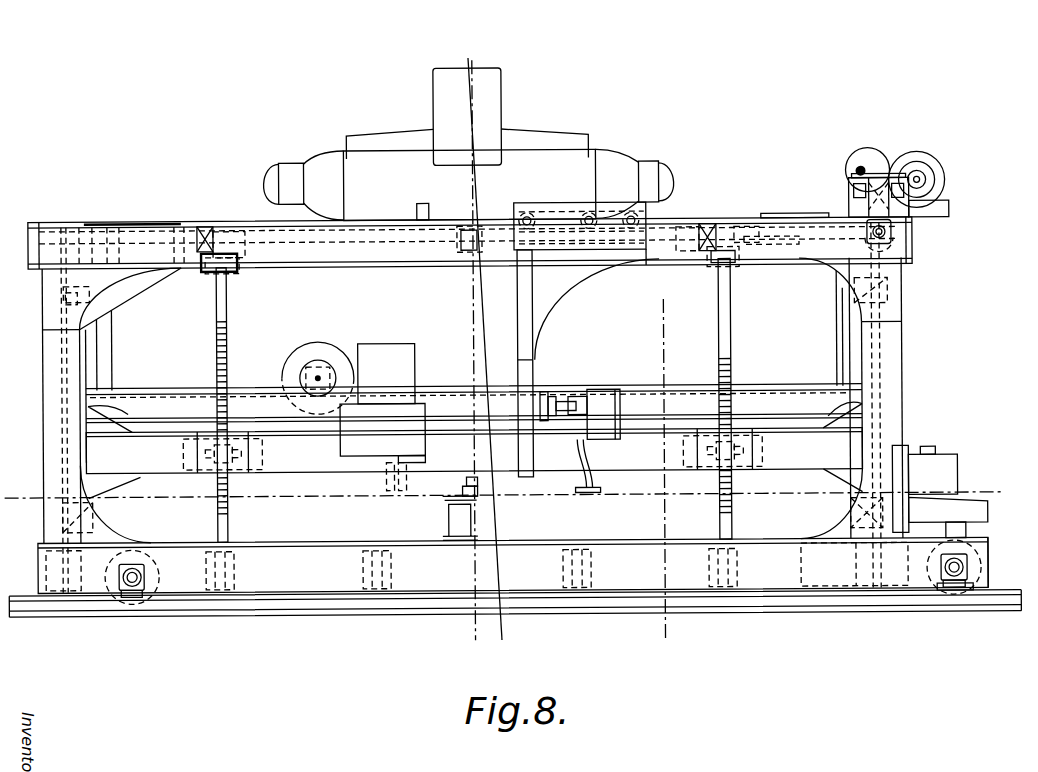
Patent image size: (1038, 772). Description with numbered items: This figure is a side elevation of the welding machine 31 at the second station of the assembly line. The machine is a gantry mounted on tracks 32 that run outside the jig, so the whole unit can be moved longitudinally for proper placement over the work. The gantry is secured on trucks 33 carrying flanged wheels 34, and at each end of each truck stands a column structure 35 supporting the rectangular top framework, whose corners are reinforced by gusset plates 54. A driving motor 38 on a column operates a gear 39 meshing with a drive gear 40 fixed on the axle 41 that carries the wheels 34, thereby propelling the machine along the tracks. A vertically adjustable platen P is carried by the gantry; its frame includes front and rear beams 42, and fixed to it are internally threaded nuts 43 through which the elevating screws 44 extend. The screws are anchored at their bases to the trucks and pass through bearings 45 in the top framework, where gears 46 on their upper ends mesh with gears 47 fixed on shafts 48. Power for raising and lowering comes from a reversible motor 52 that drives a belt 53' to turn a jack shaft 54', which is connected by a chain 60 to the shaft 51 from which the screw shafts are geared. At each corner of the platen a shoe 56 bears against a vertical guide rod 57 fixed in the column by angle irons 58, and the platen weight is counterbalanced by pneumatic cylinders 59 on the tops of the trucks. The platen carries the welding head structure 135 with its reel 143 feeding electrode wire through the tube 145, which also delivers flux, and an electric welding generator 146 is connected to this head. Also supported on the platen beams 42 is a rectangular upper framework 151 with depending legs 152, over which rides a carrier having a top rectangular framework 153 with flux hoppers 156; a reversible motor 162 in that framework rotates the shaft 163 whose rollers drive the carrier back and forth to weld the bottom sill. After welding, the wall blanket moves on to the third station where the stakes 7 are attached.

The stakes 7 is at (480, 53).
The welding machine 31 is at (115, 221).
The tracks 32 is at (862, 604).
The trucks 33 is at (345, 575).
The flanged wheels 34 is at (930, 595).
The column structure 35 is at (50, 352).
The driving motor 38 is at (955, 472).
The gear 39 is at (986, 548).
The drive gear 40 is at (142, 597).
The axle 41 is at (952, 582).
The front and rear beams 42 is at (290, 467).
The internally threaded nut 43 is at (212, 440).
The elevating screw 44 is at (226, 332).
The bearing 45 is at (212, 273).
The gear 46 is at (242, 265).
The gear 47 is at (215, 226).
The shaft 48 is at (745, 226).
The shaft 51 is at (896, 235).
The reversible motor 52 is at (918, 156).
The belt 53' is at (868, 151).
The gusset plate 54 is at (445, 197).
The jack shaft 54' is at (838, 152).
The shoe 56 is at (112, 410).
The guide rod 57 is at (62, 397).
The angle iron 58 is at (62, 292).
The cylinder 59 is at (446, 519).
The chain 60 is at (848, 198).
The welding head structure 135 is at (386, 350).
The reel 143 is at (313, 348).
The tube 145 is at (386, 480).
The electric welding generator 146 is at (590, 135).
The rectangular upper framework 151 is at (453, 263).
The leg 152 is at (106, 335).
The top rectangular framework 153 is at (557, 287).
The flux hopper 156 is at (605, 396).
The reversible motor 162 is at (578, 212).
The shaft 163 is at (632, 212).
The platen P is at (441, 394).